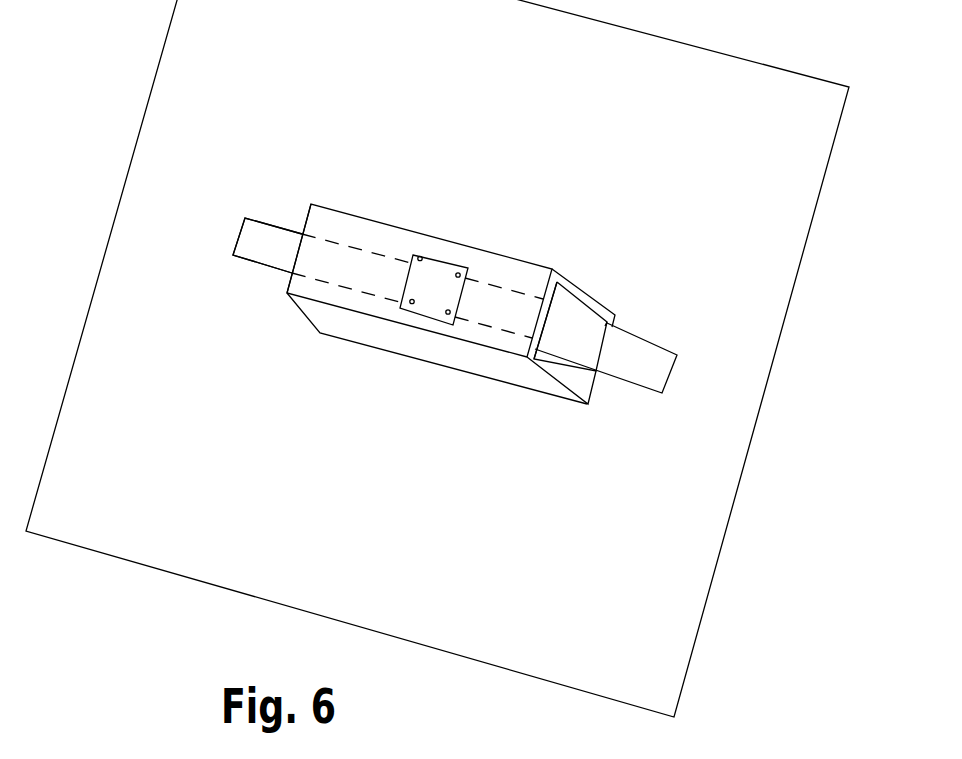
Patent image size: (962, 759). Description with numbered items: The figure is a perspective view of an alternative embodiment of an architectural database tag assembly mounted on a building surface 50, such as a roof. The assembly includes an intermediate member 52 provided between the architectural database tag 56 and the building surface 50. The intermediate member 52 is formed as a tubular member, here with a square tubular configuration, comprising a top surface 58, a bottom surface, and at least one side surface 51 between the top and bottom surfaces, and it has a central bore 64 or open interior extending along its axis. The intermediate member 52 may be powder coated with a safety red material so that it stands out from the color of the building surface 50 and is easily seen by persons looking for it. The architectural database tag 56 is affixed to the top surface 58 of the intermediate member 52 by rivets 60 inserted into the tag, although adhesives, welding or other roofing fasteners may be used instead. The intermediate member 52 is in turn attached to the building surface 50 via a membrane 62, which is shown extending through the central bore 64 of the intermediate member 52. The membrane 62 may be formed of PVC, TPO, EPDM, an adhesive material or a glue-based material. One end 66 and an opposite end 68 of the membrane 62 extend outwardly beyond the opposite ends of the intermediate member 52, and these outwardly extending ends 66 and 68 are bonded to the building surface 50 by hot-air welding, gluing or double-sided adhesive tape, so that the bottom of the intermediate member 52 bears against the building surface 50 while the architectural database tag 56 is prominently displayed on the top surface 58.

The building surface 50 is at (778, 250).
The side surface 51 is at (465, 358).
The intermediate member 52 is at (533, 260).
The architectural database tag 56 is at (442, 272).
The top surface 58 is at (498, 268).
The rivets 60 is at (420, 253).
The membrane 62 is at (271, 219).
The central bore 64 is at (565, 302).
The one end of the membrane 66 is at (260, 258).
The opposite end of the membrane 68 is at (648, 375).